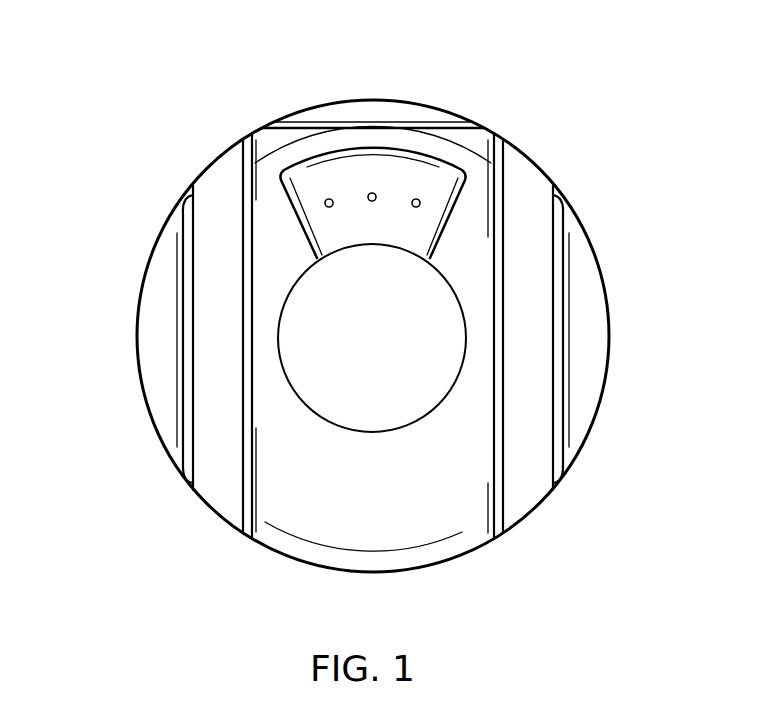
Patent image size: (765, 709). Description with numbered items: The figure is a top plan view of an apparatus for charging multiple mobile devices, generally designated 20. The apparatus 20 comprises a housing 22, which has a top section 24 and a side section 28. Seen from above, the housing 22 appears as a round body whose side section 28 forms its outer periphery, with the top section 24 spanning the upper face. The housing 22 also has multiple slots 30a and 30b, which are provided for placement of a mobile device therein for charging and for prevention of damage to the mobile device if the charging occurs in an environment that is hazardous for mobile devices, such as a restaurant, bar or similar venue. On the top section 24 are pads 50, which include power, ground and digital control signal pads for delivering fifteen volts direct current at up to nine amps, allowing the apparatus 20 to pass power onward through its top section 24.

The apparatus for charging multiple mobile devices 20 is at (145, 163).
The housing 22 is at (134, 378).
The top section 24 is at (470, 107).
The side section 28 is at (118, 334).
The slot 30a is at (218, 483).
The slot 30b is at (517, 474).
The pads 50 is at (310, 185).